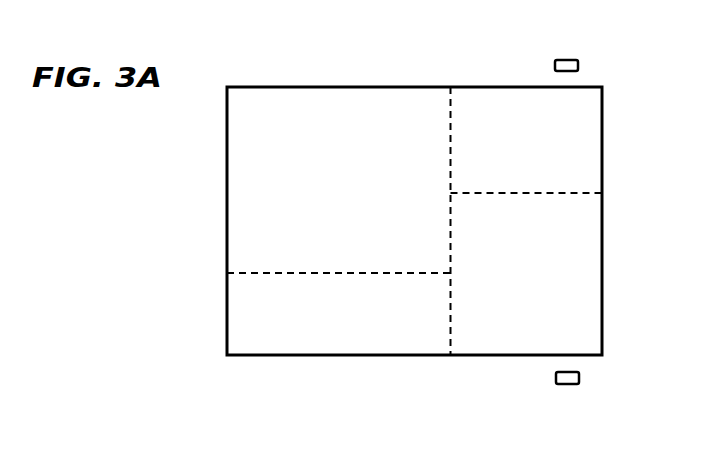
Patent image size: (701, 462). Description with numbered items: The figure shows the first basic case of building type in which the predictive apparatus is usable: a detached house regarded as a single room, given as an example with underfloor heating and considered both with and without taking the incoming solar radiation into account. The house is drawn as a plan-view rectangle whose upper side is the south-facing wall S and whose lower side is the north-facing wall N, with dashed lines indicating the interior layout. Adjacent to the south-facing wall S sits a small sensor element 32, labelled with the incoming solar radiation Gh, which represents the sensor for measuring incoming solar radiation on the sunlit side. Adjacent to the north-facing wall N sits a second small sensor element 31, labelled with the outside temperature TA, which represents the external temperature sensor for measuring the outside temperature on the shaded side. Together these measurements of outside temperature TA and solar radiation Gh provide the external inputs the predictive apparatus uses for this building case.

The sensor element at T_A (north side) 31 is at (567, 384).
The sensor element at G_h (south side) 32 is at (565, 60).
The south-facing wall S is at (418, 68).
The north-facing wall N is at (419, 379).
The incoming solar radiation Gh is at (596, 66).
The outside temperature TA is at (598, 389).